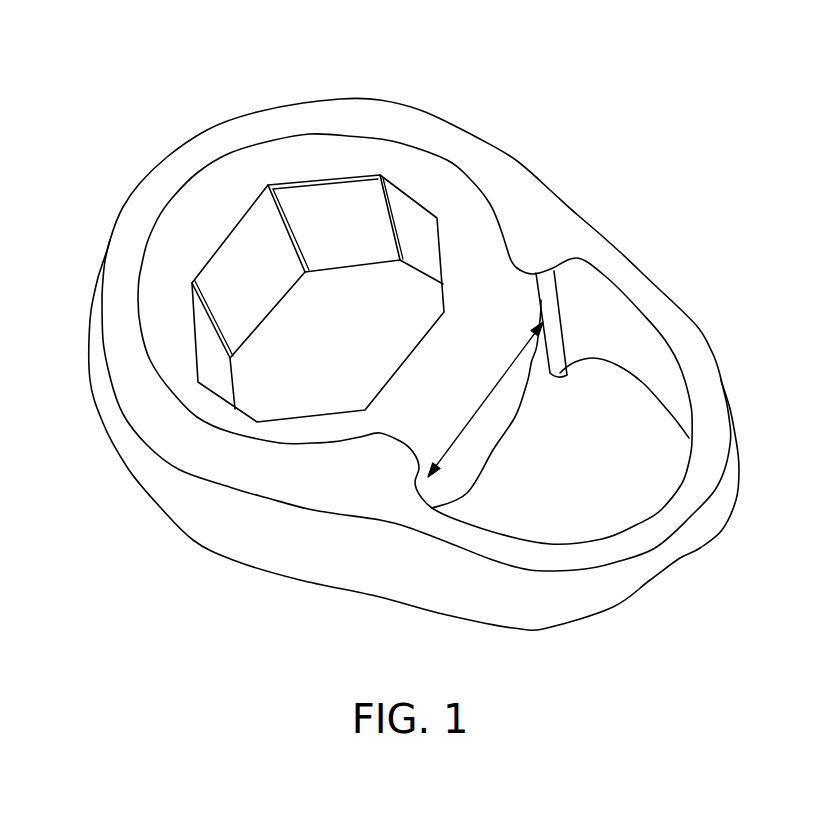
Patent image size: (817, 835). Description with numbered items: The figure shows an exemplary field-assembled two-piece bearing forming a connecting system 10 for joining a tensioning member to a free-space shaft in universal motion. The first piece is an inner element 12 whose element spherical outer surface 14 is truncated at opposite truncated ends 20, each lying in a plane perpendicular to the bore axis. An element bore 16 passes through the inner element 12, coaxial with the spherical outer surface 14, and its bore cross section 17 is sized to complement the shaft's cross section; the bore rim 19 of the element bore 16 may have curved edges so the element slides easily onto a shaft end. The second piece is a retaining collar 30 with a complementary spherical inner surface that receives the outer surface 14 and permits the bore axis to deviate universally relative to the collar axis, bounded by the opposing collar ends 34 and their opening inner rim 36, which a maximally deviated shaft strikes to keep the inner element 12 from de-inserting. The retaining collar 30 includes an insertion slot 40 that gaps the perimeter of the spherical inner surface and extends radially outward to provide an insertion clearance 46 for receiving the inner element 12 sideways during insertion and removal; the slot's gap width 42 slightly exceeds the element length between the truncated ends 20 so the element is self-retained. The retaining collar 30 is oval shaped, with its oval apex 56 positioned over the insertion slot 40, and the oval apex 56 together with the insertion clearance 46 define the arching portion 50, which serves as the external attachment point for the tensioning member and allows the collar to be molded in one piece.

The connecting system 10 is at (728, 128).
The inner element 12 is at (273, 160).
The element spherical outer surface 14 is at (495, 417).
The element bore 16 is at (357, 213).
The bore cross section 17 is at (326, 179).
The bore rim 19 is at (252, 203).
The truncated ends 20 is at (205, 210).
The retaining collar 30 is at (443, 113).
The collar ends 34 is at (377, 110).
The opening inner rim 36 is at (157, 227).
The insertion slot 40 is at (512, 470).
The gap width 42 is at (520, 267).
The insertion clearance 46 is at (620, 453).
The arching portion 50 is at (707, 420).
The oval apex 56 is at (698, 525).